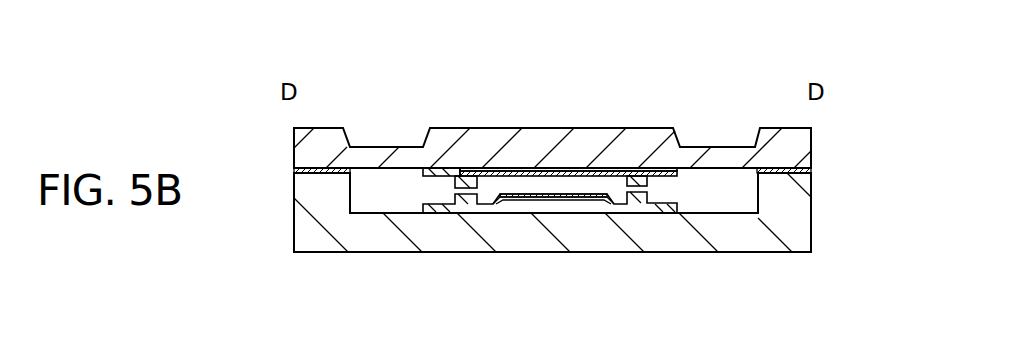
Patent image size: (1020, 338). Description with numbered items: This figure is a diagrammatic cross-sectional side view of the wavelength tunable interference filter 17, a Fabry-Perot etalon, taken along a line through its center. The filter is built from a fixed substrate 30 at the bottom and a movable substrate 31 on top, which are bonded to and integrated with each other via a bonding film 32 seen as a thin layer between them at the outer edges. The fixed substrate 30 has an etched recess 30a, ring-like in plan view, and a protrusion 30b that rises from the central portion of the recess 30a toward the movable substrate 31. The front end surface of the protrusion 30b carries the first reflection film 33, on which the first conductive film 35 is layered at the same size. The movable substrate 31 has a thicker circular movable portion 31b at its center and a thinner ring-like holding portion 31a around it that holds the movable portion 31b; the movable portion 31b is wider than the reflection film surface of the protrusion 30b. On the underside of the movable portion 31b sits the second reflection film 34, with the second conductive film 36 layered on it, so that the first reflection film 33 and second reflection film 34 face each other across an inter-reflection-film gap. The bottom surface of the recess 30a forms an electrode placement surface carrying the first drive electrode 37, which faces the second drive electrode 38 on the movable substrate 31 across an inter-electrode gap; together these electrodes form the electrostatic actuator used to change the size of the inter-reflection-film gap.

The wavelength tunable interference filter 17 is at (745, 83).
The fixed substrate 30 is at (811, 223).
The recess 30a is at (722, 206).
The protrusion 30b is at (510, 213).
The movable substrate 31 is at (811, 133).
The holding portion 31a is at (710, 158).
The movable portion 31b is at (500, 140).
The bonding film 32 is at (811, 170).
The first reflection film 33 is at (547, 200).
The second reflection film 34 is at (553, 168).
The first conductive film 35 is at (577, 197).
The second conductive film 36 is at (613, 172).
The first drive electrode 37 is at (432, 213).
The second drive electrode 38 is at (451, 170).